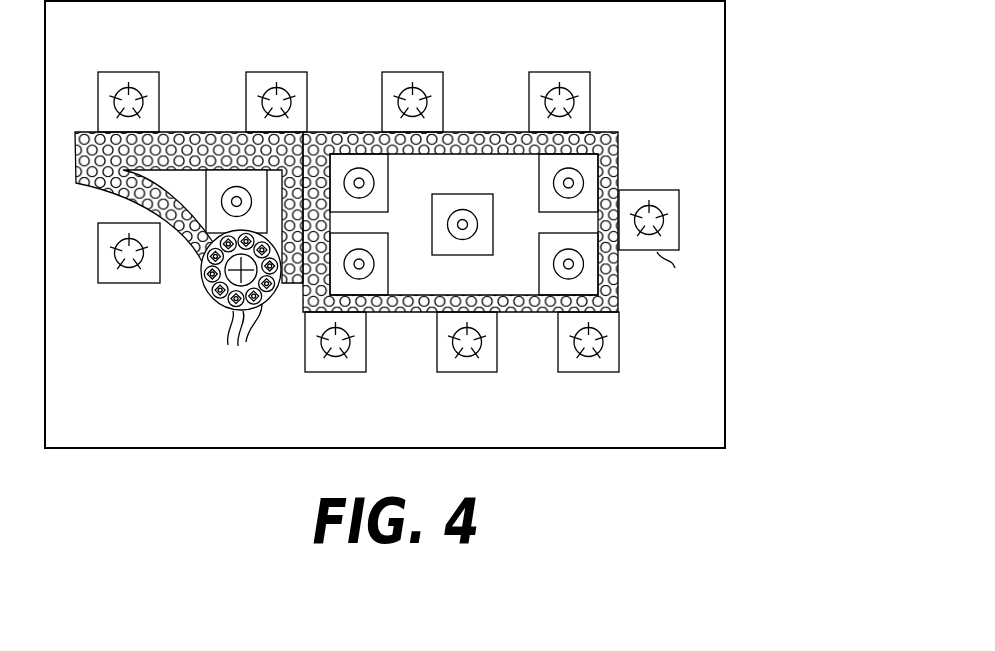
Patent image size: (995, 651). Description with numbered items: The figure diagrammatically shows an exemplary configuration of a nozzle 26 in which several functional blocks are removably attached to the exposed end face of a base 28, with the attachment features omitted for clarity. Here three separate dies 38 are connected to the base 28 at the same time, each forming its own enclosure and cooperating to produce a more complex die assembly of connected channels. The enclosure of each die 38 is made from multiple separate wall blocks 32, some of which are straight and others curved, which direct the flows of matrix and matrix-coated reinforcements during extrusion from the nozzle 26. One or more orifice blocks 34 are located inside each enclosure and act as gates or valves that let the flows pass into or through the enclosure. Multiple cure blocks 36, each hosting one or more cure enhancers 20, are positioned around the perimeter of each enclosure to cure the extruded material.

The cure enhancer 20 is at (655, 210).
The nozzle 26 is at (449, 224).
The base 28 is at (710, 340).
The wall block 32 is at (478, 132).
The orifice block 34 is at (539, 167).
The cure block 36 is at (208, 298).
The die 38 is at (92, 200).